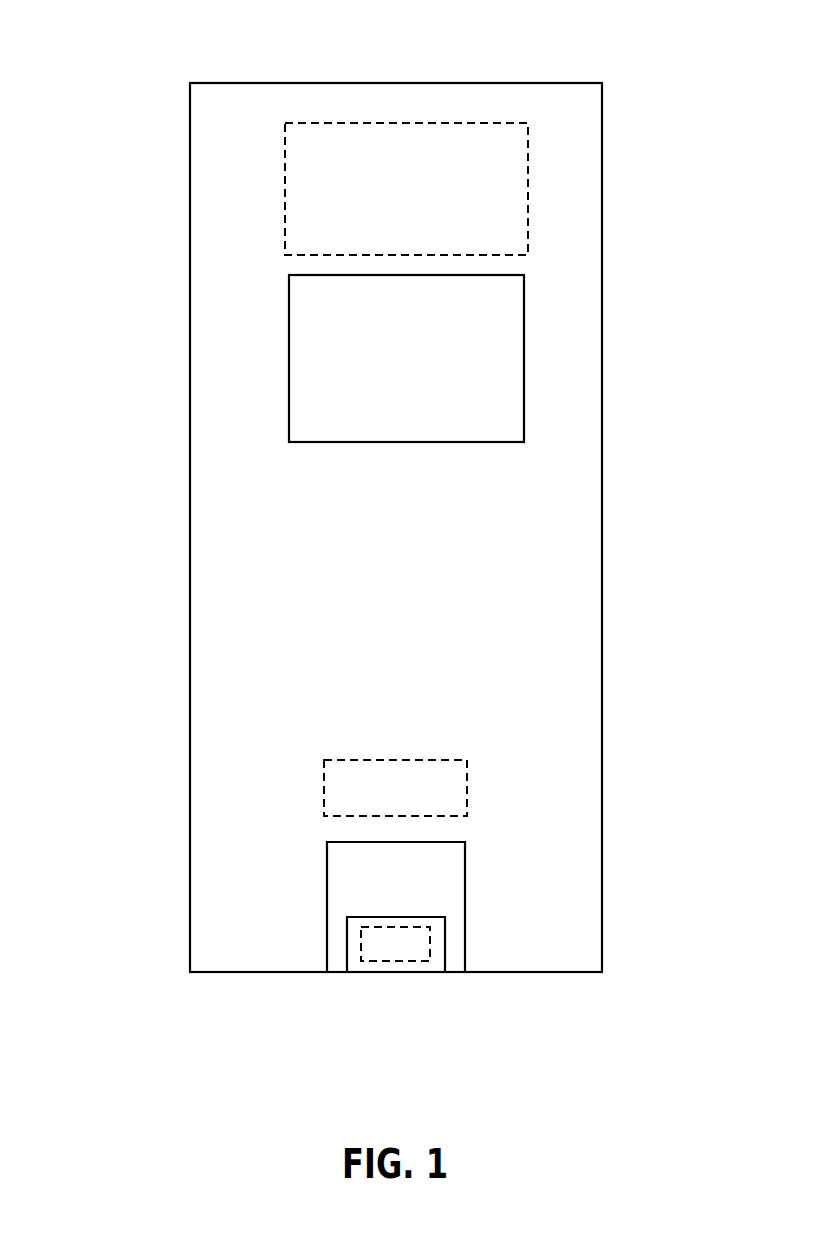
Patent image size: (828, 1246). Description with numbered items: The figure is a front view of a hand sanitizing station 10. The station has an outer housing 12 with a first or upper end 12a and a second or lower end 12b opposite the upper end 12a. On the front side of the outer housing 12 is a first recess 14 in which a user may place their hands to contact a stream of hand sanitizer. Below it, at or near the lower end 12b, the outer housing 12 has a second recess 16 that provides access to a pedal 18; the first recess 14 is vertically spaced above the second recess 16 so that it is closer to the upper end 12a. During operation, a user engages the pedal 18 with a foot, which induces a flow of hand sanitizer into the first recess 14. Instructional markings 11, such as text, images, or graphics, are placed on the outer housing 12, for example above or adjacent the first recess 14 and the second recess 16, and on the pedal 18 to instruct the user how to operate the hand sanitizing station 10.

The hand sanitizing station 10 is at (150, 50).
The instructional markings 11 is at (285, 222).
The outer housing 12 is at (603, 150).
The upper end 12a is at (336, 81).
The lower end 12b is at (246, 975).
The first recess 14 is at (525, 328).
The second recess 16 is at (466, 893).
The pedal 18 is at (446, 973).